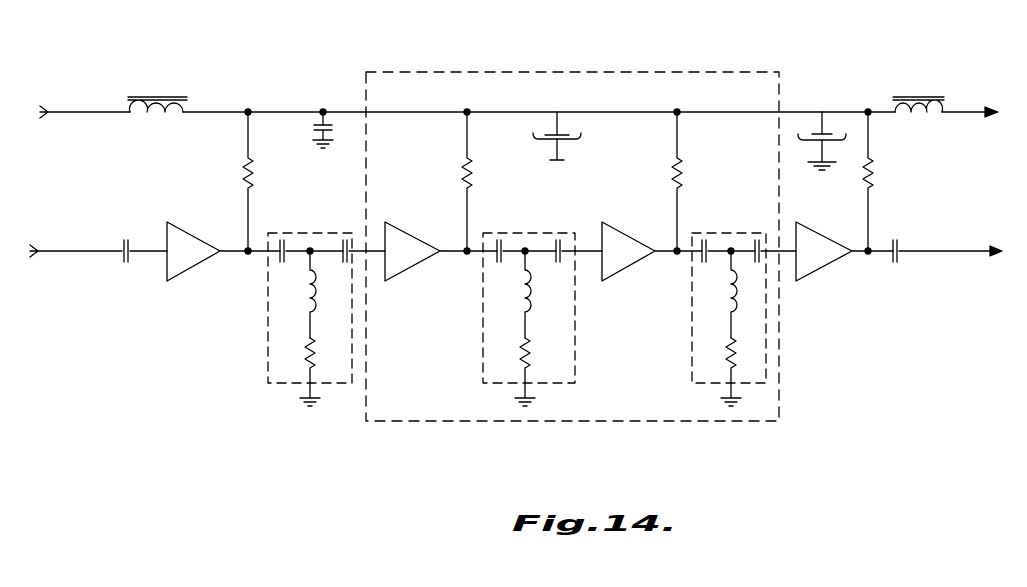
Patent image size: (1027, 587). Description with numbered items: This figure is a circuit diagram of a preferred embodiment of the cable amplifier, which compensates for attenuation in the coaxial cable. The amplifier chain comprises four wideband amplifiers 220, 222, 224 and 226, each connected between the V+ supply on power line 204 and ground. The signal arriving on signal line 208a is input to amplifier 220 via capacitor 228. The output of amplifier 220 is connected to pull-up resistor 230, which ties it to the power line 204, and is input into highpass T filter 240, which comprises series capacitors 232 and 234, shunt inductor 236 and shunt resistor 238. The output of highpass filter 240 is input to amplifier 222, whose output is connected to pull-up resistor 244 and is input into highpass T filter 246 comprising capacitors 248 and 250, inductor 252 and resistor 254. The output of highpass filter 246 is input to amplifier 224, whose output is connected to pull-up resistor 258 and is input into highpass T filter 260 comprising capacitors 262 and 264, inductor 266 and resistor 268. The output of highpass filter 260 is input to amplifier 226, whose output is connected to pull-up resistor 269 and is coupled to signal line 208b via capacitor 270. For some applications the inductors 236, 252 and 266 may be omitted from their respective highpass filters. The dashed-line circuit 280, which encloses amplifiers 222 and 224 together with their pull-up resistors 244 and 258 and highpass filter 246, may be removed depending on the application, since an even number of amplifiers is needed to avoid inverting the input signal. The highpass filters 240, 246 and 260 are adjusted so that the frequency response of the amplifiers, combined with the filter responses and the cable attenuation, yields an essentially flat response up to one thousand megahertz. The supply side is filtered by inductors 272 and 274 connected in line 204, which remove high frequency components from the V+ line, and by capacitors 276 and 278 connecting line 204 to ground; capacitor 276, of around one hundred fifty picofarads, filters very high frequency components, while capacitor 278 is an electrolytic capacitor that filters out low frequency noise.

The power line 204 is at (85, 110).
The signal line 208a is at (82, 250).
The signal line 208b is at (933, 250).
The amplifier 220 is at (192, 234).
The amplifier 222 is at (420, 218).
The amplifier 224 is at (636, 218).
The amplifier 226 is at (830, 218).
The capacitor 228 is at (124, 262).
The pull-up resistor 230 is at (240, 176).
The capacitor 232 is at (284, 238).
The capacitor 234 is at (345, 238).
The inductor 236 is at (302, 300).
The resistor 238 is at (302, 354).
The highpass T filter 240 is at (276, 387).
The pull-up resistor 244 is at (470, 170).
The highpass T filter 246 is at (483, 372).
The capacitor 248 is at (502, 238).
The capacitor 250 is at (561, 238).
The inductor 252 is at (516, 292).
The resistor 254 is at (518, 348).
The pull-up resistor 258 is at (682, 166).
The highpass T filter 260 is at (692, 376).
The capacitor 262 is at (708, 238).
The capacitor 264 is at (756, 238).
The inductor 266 is at (718, 292).
The resistor 268 is at (726, 346).
The pull-up resistor 269 is at (873, 166).
The capacitor 270 is at (893, 268).
The inductor 272 is at (150, 116).
The inductor 274 is at (912, 116).
The capacitor 276 is at (320, 129).
The capacitor 278 is at (583, 140).
The circuit 280 is at (543, 70).